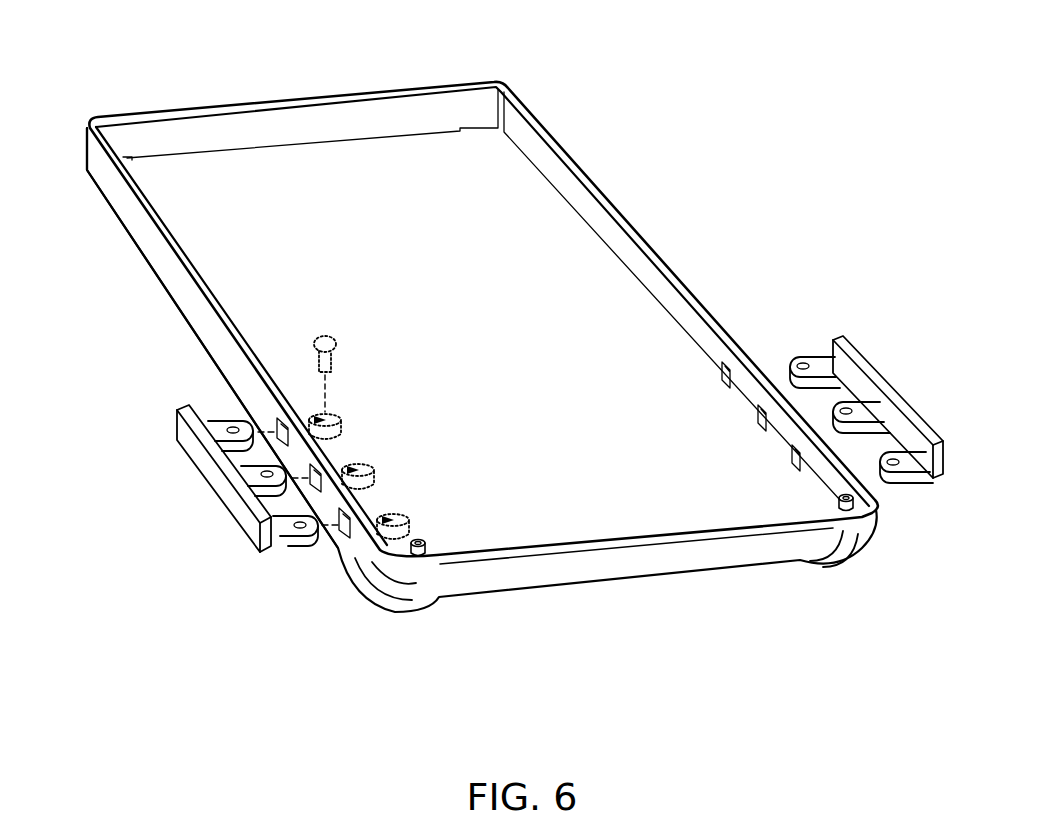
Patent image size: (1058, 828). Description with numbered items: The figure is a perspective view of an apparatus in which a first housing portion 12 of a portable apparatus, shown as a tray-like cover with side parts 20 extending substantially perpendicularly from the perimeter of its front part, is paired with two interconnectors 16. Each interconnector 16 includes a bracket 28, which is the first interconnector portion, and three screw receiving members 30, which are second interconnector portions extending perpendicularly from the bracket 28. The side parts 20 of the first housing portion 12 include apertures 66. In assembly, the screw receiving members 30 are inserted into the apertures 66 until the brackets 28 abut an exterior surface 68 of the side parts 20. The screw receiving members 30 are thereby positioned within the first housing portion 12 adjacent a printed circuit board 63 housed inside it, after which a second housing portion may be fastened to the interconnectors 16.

The first housing portion 12 is at (493, 351).
The interconnector 16 is at (537, 445).
The side part 20 is at (290, 120).
The bracket 28 is at (185, 455).
The screw receiving member 30 is at (215, 428).
The printed circuit board 63 is at (365, 215).
The aperture 66 is at (283, 420).
The exterior surface 68 is at (103, 210).